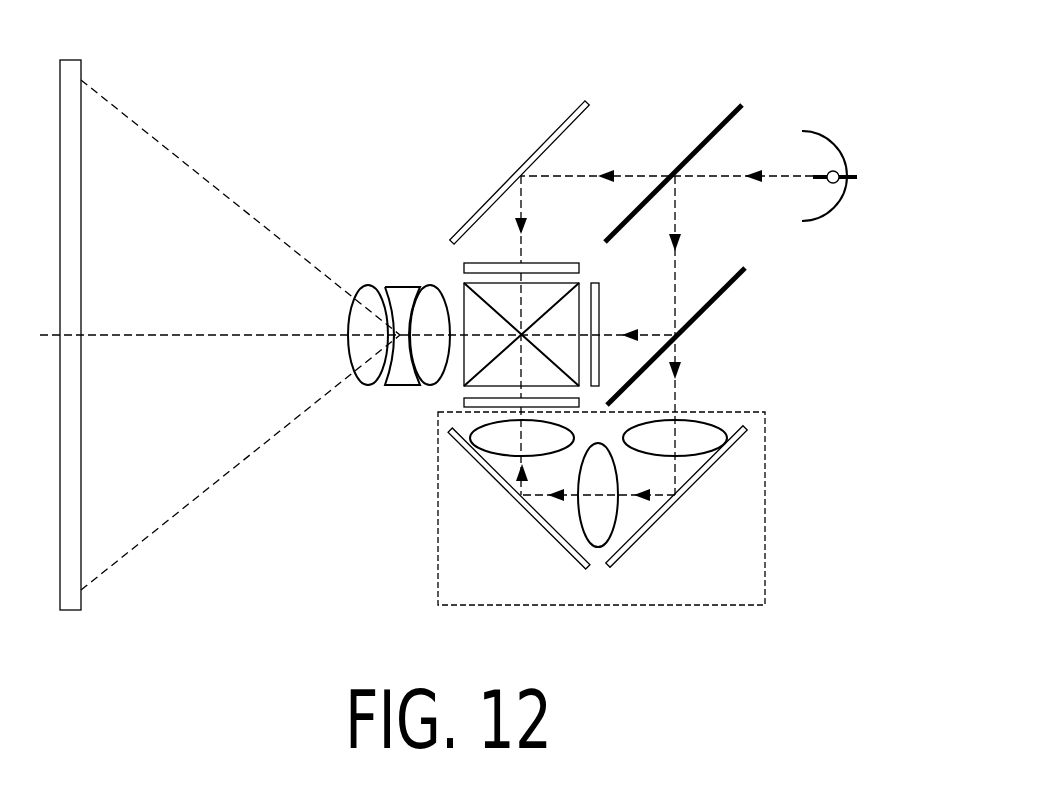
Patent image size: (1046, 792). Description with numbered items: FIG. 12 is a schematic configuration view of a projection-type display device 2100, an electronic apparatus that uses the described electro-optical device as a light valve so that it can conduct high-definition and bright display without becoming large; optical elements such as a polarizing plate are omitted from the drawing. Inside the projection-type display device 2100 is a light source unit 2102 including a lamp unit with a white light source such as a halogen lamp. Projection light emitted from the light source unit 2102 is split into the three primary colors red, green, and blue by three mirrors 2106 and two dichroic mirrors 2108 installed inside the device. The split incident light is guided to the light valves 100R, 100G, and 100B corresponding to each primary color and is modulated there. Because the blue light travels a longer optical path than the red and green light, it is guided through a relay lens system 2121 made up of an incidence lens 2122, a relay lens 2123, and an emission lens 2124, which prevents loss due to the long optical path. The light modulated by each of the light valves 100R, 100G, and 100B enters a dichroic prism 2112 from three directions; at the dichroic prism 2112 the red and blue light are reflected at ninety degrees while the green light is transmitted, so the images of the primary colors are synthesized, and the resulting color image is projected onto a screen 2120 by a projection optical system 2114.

The projection-type display device 2100 is at (614, 73).
The light source unit 2102 is at (833, 171).
The mirrors 2106 is at (554, 131).
The dichroic mirrors 2108 is at (710, 132).
The light valve 100R is at (500, 263).
The light valve 100G is at (599, 310).
The light valve 100B is at (464, 402).
The dichroic prism 2112 is at (478, 283).
The projection optical system 2114 is at (452, 272).
The screen 2120 is at (81, 598).
The relay lens system 2121 is at (765, 458).
The incidence lens 2122 is at (697, 448).
The relay lens 2123 is at (608, 530).
The emission lens 2124 is at (497, 445).